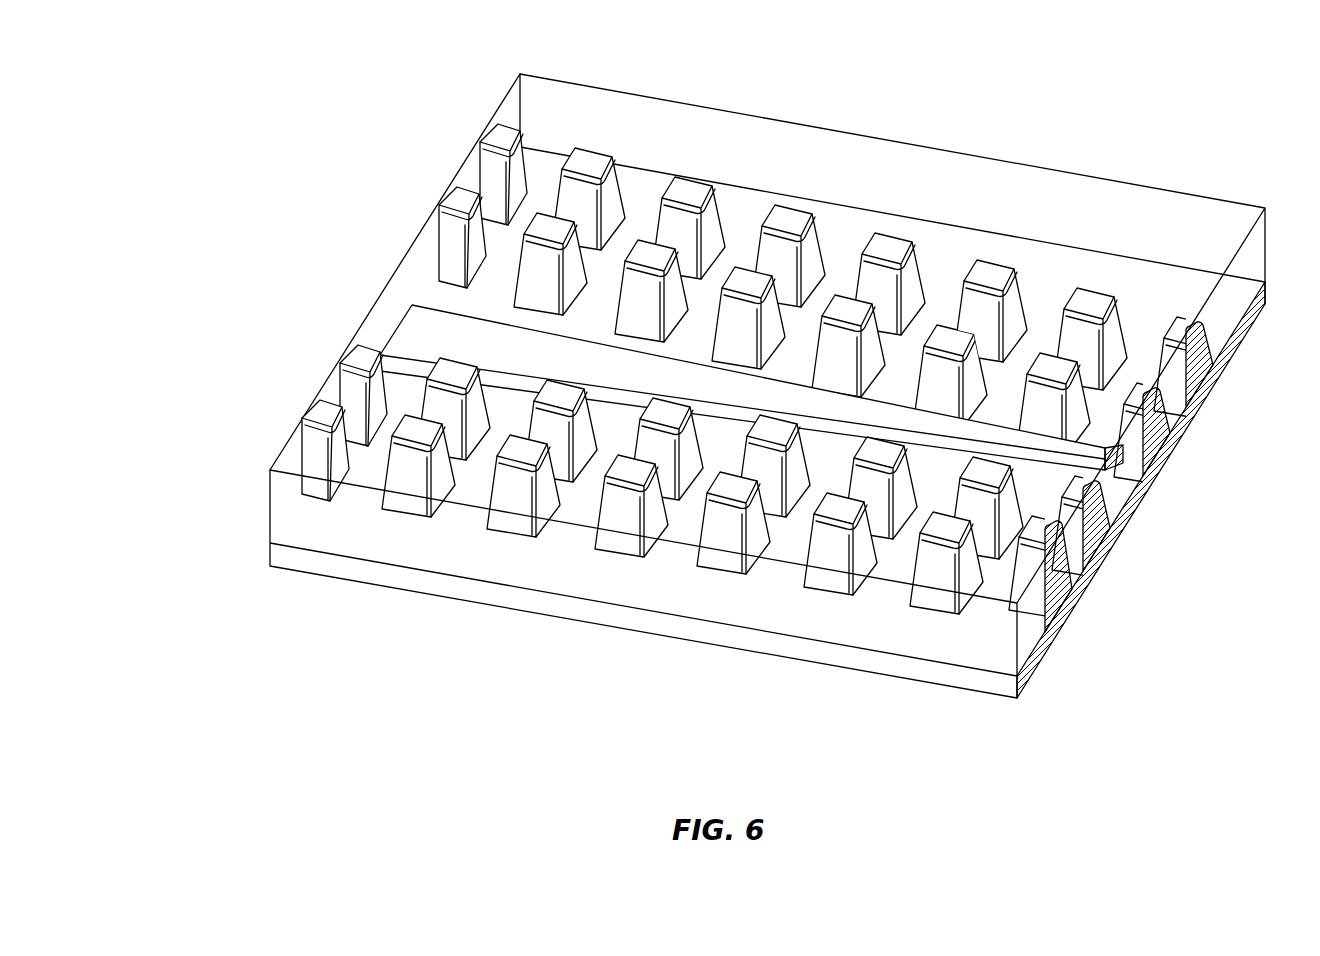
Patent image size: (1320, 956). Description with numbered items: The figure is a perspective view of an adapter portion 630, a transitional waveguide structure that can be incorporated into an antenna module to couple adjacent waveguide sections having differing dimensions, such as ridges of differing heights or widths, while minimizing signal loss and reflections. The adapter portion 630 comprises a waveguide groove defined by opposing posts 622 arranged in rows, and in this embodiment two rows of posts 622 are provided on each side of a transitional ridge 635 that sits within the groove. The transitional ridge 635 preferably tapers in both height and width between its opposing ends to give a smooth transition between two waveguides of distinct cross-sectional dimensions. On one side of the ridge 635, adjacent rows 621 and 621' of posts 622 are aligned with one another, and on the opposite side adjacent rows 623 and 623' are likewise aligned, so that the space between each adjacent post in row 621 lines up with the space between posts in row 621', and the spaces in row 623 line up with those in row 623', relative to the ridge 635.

The adapter portion 630 is at (969, 121).
The posts 622 is at (988, 274).
The row of posts 623 is at (385, 237).
The row of posts 623' is at (426, 170).
The row of posts 621 is at (242, 450).
The row of posts 621' is at (281, 388).
The transitional ridge 635 is at (427, 342).